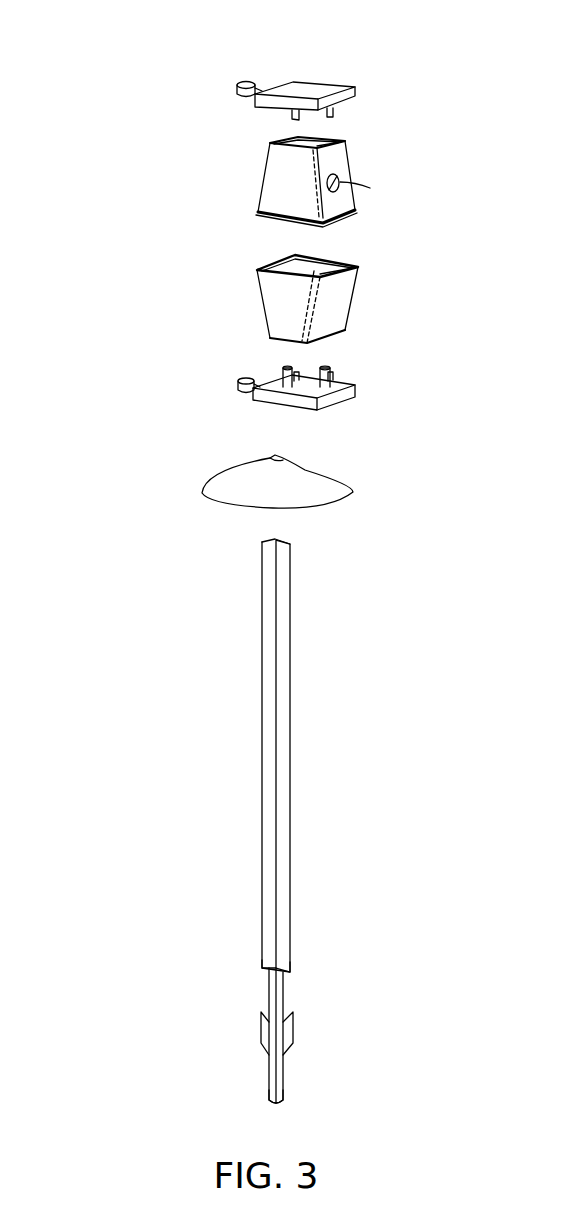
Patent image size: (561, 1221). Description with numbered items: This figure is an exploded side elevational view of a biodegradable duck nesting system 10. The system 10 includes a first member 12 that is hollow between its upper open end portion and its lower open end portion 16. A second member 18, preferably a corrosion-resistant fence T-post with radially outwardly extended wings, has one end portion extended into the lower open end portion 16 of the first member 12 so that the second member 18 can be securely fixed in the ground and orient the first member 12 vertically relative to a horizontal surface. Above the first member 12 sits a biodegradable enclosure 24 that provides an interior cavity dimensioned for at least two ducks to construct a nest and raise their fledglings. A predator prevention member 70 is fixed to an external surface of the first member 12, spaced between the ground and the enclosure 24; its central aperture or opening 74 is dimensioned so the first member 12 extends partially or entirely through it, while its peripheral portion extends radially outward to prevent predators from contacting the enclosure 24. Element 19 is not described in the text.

The biodegradable duck nesting system 10 is at (141, 80).
The biodegradable enclosure 24 is at (388, 82).
The predator prevention member 70 is at (333, 485).
The central aperture or opening 74 is at (270, 450).
The first member 12 is at (291, 757).
The lower end portion 16 is at (250, 950).
The second member 18 is at (283, 992).
The tip of stake 19 is at (258, 1082).